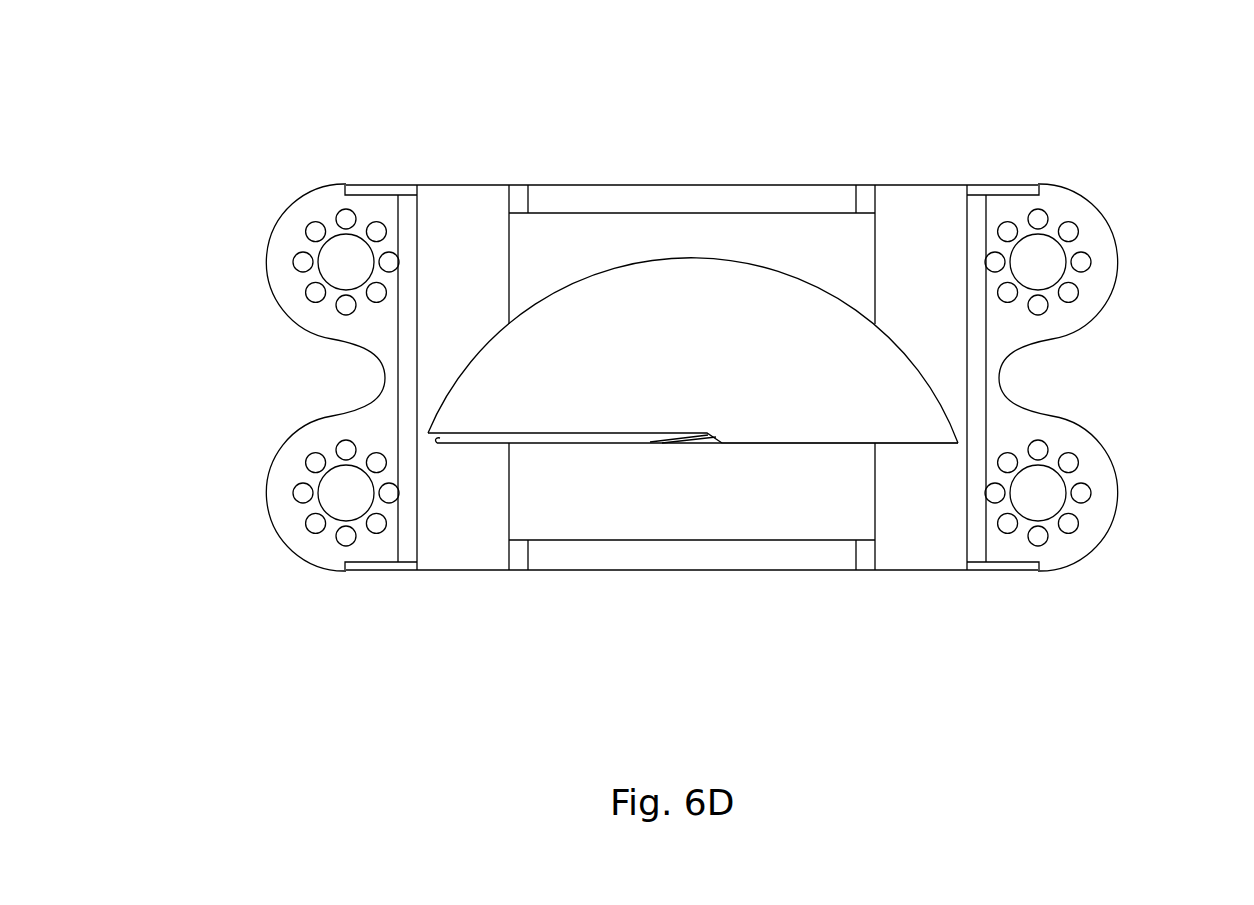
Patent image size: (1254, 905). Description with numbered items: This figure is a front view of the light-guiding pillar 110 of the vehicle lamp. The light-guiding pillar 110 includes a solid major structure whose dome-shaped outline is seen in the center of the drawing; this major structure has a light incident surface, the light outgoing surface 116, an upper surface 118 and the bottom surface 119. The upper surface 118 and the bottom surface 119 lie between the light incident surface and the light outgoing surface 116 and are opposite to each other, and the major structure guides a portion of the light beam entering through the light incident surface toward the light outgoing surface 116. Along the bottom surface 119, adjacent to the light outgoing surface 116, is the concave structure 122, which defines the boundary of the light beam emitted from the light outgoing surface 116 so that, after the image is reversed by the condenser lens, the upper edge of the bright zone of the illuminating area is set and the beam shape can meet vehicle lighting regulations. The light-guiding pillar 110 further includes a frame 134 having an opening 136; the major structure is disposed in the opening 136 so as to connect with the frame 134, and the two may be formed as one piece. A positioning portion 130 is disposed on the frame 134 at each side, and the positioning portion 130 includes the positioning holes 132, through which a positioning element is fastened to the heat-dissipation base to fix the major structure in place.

The light-guiding pillar 110 is at (175, 58).
The light outgoing surface 116 is at (760, 372).
The upper surface 118 is at (613, 267).
The bottom surface 119 is at (738, 444).
The concave structure 122 is at (603, 433).
The positioning portion 130 is at (1097, 212).
The positioning holes 132 is at (1070, 243).
The frame 134 is at (752, 185).
The opening 136 is at (798, 212).